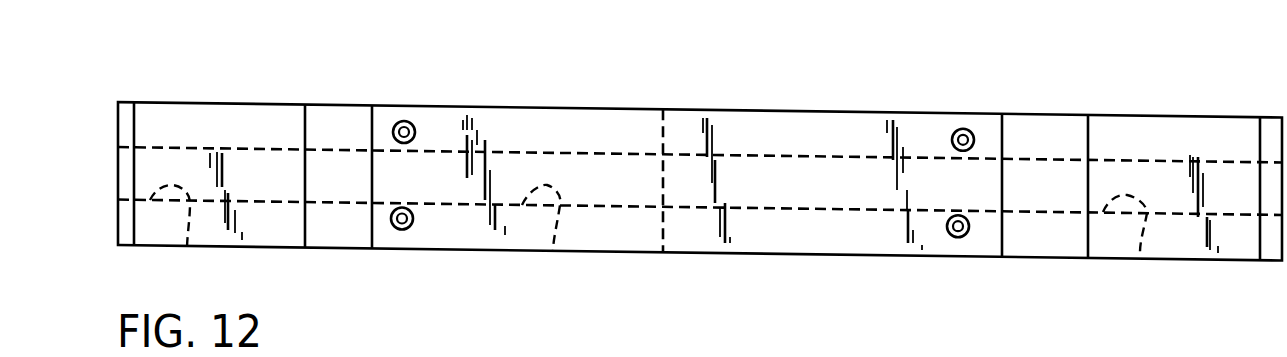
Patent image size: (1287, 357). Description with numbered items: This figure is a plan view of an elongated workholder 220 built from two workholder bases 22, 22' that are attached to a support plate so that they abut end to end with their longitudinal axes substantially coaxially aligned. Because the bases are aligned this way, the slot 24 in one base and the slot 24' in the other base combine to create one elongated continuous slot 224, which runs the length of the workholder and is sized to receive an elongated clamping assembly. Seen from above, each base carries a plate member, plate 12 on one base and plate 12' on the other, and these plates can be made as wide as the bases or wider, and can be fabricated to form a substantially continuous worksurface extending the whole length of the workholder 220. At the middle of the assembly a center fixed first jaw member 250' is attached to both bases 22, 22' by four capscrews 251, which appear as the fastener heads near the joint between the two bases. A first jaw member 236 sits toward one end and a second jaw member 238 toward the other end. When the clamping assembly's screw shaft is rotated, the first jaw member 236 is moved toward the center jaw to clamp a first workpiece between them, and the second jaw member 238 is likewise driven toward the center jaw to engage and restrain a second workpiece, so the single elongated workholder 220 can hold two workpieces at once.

The elongated workholder 220 is at (1283, 64).
The workholder base 22' is at (211, 146).
The workholder base 22 is at (1185, 159).
The first jaw member 236 is at (233, 136).
The second jaw member 238 is at (1188, 151).
The plate member 12' is at (338, 177).
The plate member 12 is at (1045, 186).
The center board 250' is at (692, 157).
The capscrews 251 is at (404, 121).
The elongated continuous slot 224 is at (553, 252).
The slot 24' is at (212, 242).
The slot 24 is at (1162, 250).